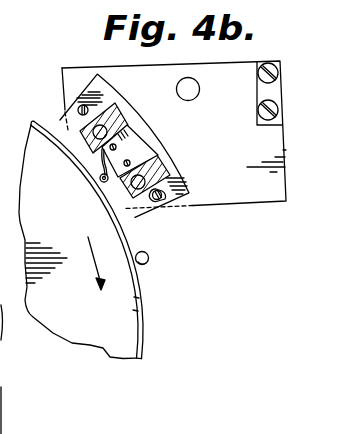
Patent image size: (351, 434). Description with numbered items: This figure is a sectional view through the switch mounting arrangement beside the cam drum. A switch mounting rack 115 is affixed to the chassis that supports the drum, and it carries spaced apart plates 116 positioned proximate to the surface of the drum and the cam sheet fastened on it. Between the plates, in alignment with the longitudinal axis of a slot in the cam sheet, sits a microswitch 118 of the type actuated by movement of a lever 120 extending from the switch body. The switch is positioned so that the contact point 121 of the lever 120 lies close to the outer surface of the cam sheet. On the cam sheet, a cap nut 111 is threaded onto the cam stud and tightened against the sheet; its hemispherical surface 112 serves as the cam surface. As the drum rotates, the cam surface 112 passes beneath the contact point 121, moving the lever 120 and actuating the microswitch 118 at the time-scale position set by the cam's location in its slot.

The cap nut 111 is at (149, 268).
The hemispherical surface 112 is at (149, 256).
The switch mounting rack 115 is at (287, 192).
The spaced apart plates 116 is at (276, 150).
The microswitch 118 is at (144, 147).
The lever 120 is at (101, 160).
The contact point 121 is at (101, 179).